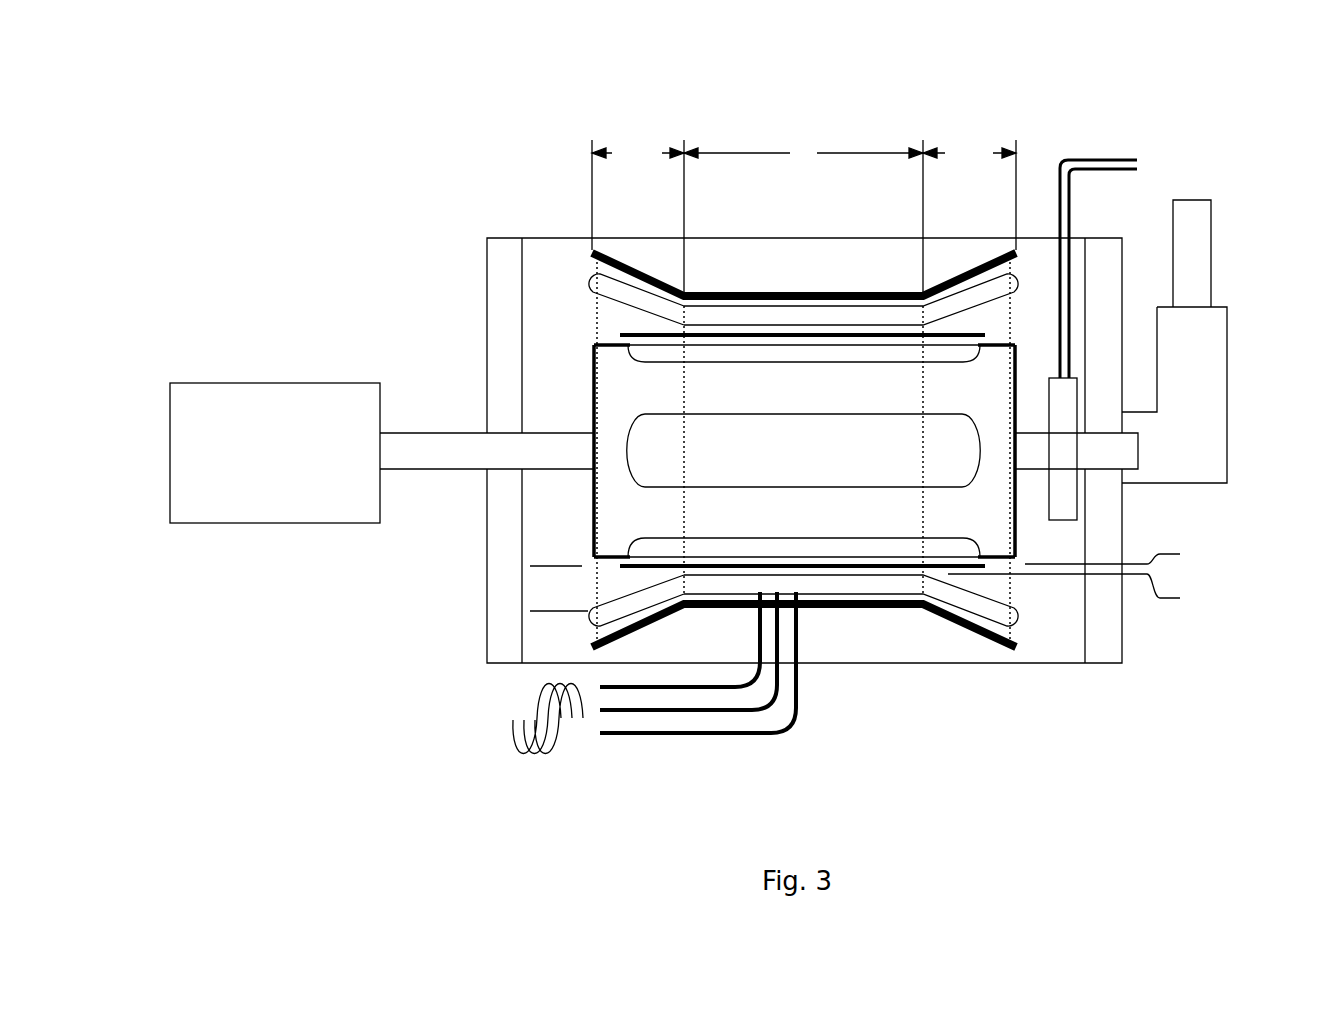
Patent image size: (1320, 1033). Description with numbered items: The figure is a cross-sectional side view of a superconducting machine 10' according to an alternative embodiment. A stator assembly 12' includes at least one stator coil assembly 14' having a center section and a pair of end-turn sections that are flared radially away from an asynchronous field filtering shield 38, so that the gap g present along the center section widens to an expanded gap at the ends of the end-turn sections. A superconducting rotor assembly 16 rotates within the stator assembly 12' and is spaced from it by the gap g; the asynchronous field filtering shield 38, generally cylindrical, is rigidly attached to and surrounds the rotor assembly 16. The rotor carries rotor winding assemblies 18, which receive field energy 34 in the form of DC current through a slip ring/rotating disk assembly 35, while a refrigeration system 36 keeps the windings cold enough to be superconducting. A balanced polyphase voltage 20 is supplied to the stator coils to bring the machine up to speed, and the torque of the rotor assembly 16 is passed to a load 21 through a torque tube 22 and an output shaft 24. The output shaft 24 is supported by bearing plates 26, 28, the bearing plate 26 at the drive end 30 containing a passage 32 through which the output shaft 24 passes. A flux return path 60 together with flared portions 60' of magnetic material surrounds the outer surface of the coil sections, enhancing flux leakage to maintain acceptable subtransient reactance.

The superconducting machine 10' is at (751, 441).
The stator assembly 12' is at (792, 552).
The stator coil assembly 14' is at (806, 573).
The superconducting rotor assembly 16 is at (928, 518).
The rotor winding assembly 18 is at (804, 631).
The balanced polyphase voltage 20 is at (495, 717).
The load 21 is at (322, 383).
The torque tube 22 is at (592, 350).
The output shaft 24 is at (465, 434).
The bearing plate 26 is at (487, 612).
The bearing plate 28 is at (1122, 538).
The drive end 30 is at (442, 203).
The passage 32 is at (503, 452).
The field energy 34 is at (1160, 138).
The slip ring/rotating disk assembly 35 is at (1065, 520).
The refrigeration system 36 is at (1230, 360).
The asynchronous field filtering shield 38 is at (963, 567).
The flux return path 60 is at (803, 411).
The flux return path 60' is at (726, 340).